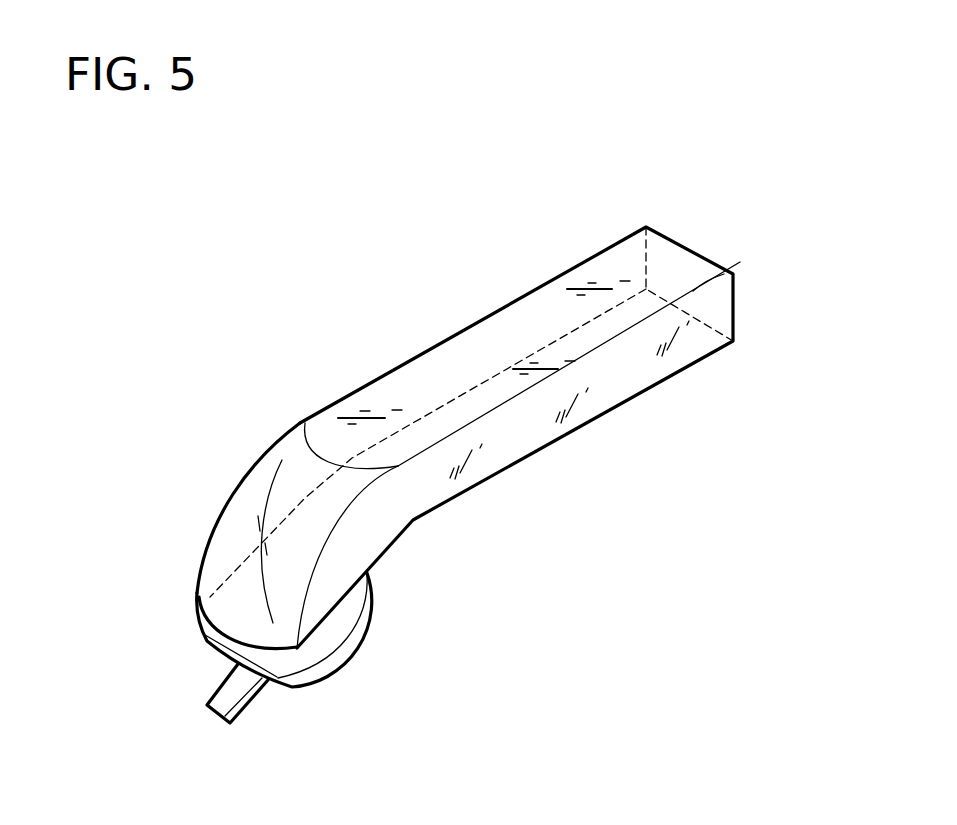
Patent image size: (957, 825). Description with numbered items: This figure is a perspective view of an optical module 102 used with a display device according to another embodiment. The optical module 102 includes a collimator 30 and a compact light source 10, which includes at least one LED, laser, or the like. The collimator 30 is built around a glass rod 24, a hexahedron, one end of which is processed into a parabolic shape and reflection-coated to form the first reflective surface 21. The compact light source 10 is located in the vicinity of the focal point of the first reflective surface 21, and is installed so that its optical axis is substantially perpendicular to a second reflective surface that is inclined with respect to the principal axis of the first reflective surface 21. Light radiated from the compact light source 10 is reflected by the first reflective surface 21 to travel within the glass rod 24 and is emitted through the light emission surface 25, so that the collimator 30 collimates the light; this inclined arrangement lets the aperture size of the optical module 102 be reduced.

The optical module 102 is at (704, 220).
The collimator 30 is at (511, 300).
The glass rod 24 is at (402, 382).
The light emission surface 25 is at (742, 260).
The first reflective surface 21 is at (272, 473).
The compact light source 10 is at (337, 653).